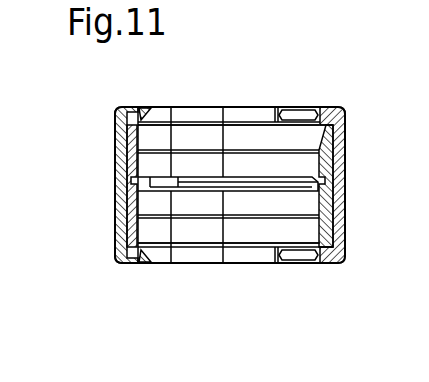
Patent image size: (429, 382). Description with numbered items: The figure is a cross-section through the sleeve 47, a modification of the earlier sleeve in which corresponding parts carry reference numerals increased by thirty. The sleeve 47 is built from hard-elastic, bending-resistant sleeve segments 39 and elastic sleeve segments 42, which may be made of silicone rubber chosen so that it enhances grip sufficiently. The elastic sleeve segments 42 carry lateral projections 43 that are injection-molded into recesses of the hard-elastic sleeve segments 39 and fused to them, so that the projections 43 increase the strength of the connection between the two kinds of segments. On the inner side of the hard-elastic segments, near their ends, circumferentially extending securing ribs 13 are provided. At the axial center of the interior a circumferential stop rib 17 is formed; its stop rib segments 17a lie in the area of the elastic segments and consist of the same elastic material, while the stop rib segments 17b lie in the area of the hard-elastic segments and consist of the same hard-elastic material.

The securing rib 13 is at (300, 110).
The stop rib 17 is at (251, 166).
The stop rib segment 17a is at (200, 193).
The stop rib segment 17b is at (160, 175).
The hard-elastic sleeve segment 39 is at (110, 109).
The elastic sleeve segment 42 is at (195, 98).
The lateral projection 43 is at (116, 160).
The sleeve 47 is at (100, 260).